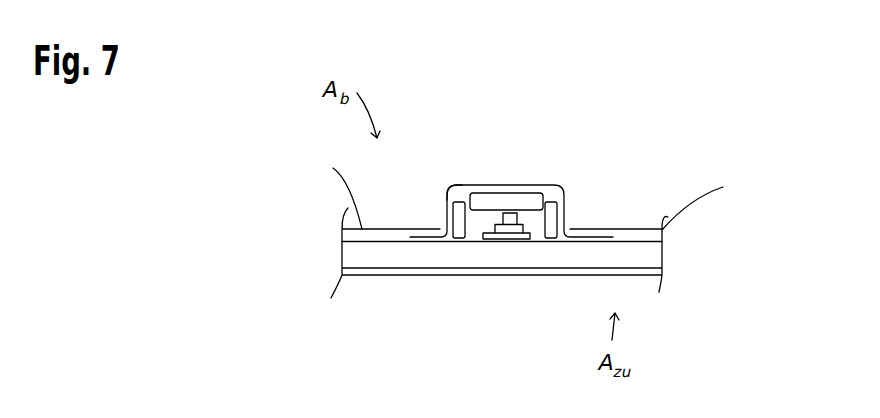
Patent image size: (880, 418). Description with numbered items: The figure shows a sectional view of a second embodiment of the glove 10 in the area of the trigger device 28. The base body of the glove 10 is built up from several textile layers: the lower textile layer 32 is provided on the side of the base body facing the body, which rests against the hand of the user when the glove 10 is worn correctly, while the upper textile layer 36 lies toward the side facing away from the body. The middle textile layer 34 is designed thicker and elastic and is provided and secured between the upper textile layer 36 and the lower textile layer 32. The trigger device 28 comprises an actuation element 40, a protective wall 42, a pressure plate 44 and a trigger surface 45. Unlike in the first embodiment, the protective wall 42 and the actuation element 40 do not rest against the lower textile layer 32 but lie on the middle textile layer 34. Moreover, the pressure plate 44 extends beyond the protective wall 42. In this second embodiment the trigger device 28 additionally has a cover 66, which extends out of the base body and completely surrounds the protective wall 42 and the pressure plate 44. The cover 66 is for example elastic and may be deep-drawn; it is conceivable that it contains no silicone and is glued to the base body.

The glove 10 is at (708, 75).
The trigger device 28 is at (583, 146).
The lower textile layer 32 is at (378, 276).
The middle textile layer 34 is at (440, 260).
The upper textile layer 36 is at (533, 195).
The actuation element 40 is at (512, 238).
The protective wall 42 is at (552, 215).
The pressure plate 44 is at (491, 200).
The trigger surface 45 is at (536, 164).
The cover 66 is at (452, 183).